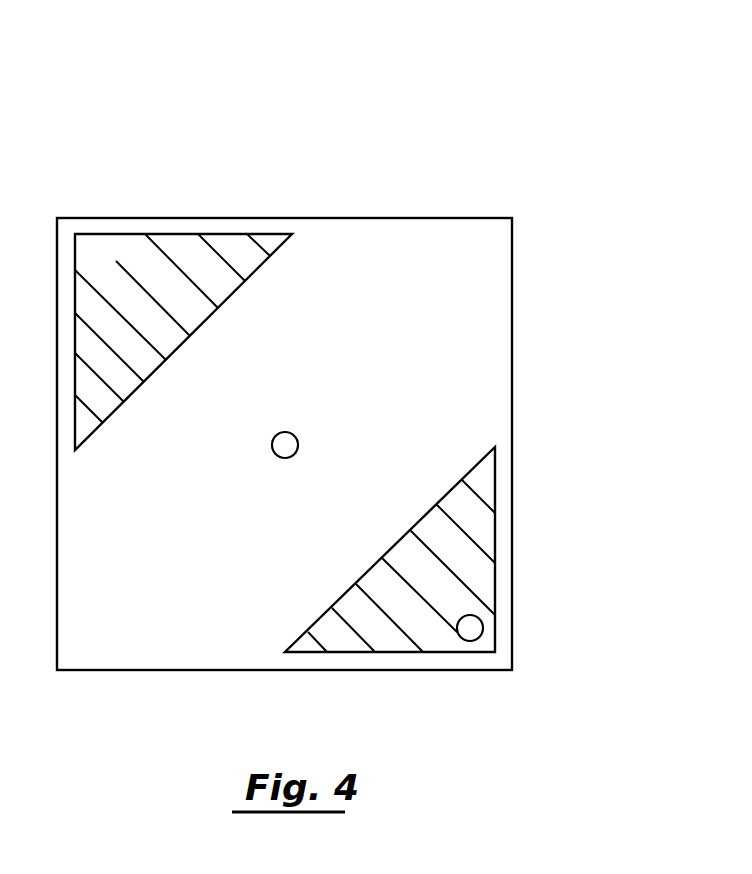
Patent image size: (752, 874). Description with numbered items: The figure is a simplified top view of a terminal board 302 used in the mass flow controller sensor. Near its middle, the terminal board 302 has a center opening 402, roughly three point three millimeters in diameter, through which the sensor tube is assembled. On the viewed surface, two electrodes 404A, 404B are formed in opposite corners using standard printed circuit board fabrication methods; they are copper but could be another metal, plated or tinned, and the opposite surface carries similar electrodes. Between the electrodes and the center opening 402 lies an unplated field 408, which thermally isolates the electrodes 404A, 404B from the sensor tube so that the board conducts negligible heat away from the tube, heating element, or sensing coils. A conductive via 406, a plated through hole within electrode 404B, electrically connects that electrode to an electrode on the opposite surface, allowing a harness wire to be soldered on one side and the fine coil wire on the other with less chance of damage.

The terminal board 302 is at (378, 172).
The center opening 402 is at (297, 435).
The electrode 404A is at (177, 235).
The electrode 404B is at (495, 489).
The conductive via 406 is at (483, 632).
The unplated field 408 is at (440, 255).